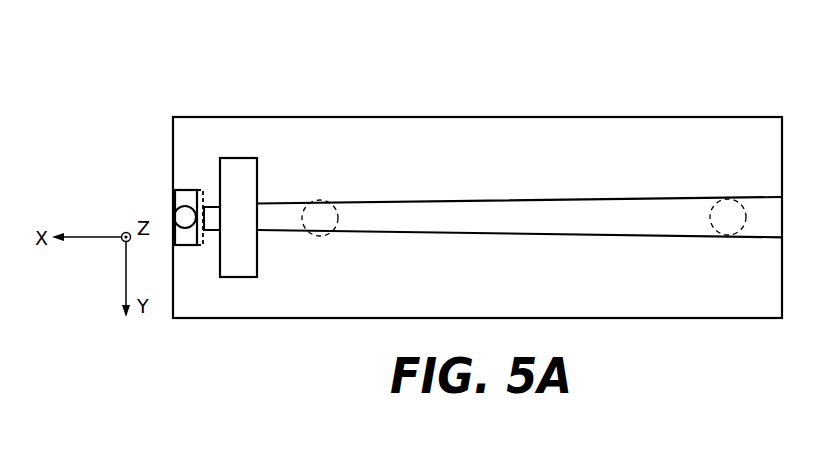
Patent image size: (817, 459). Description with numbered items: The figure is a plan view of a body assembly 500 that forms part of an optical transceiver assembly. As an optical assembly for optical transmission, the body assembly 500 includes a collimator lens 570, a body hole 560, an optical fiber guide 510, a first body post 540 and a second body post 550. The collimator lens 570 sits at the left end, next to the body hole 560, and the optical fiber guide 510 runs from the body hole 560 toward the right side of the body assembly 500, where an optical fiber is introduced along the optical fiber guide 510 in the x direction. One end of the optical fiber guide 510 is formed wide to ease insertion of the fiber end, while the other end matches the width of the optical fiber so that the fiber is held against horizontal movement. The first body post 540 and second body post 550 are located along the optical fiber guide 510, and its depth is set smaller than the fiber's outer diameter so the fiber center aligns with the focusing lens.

The body assembly 500 is at (508, 49).
The optical fiber guide 510 is at (505, 202).
The first body post 540 is at (320, 200).
The second body post 550 is at (728, 197).
The body hole 560 is at (240, 158).
The collimator lens 570 is at (177, 200).